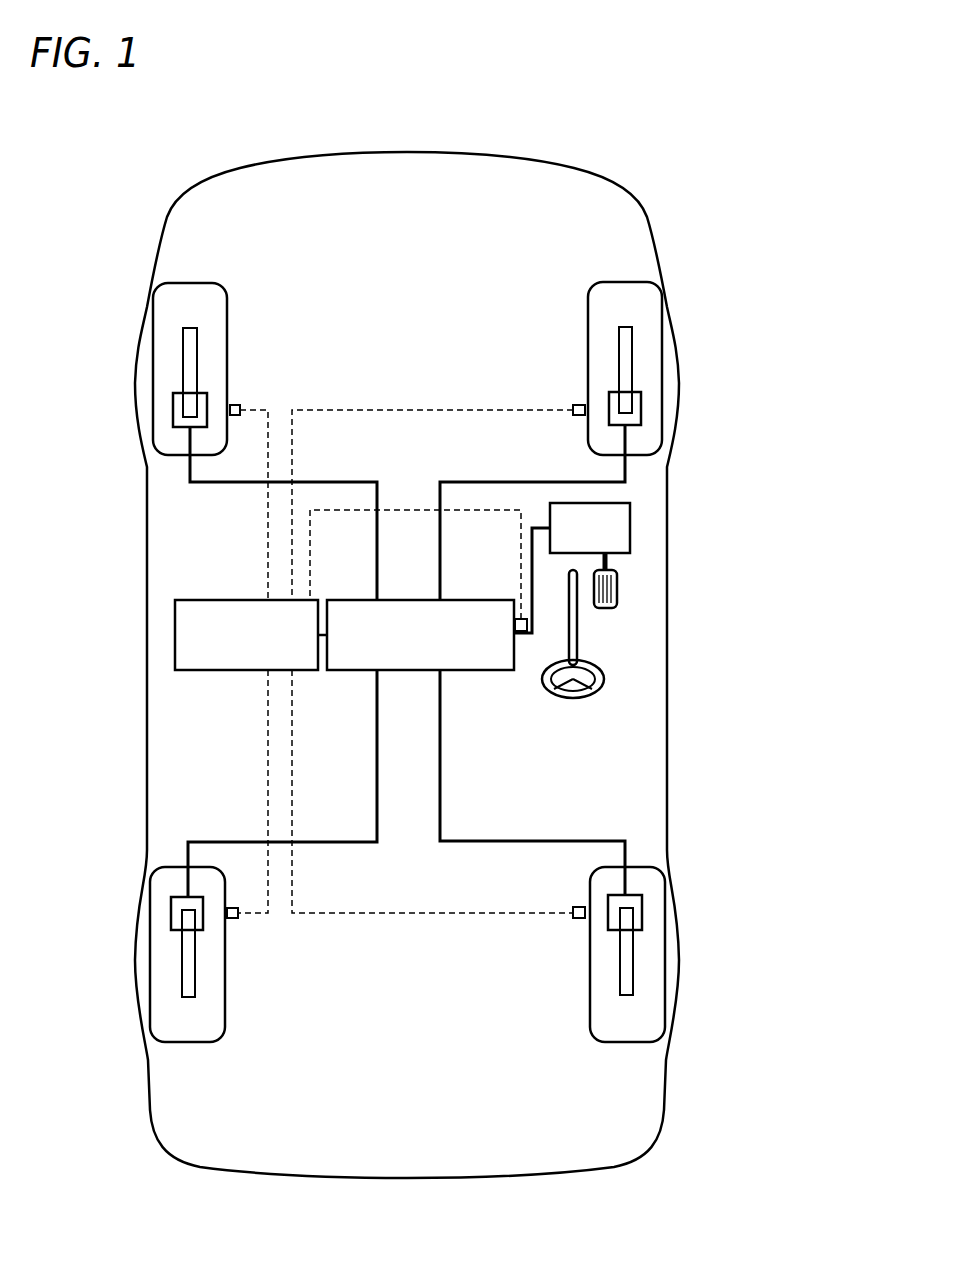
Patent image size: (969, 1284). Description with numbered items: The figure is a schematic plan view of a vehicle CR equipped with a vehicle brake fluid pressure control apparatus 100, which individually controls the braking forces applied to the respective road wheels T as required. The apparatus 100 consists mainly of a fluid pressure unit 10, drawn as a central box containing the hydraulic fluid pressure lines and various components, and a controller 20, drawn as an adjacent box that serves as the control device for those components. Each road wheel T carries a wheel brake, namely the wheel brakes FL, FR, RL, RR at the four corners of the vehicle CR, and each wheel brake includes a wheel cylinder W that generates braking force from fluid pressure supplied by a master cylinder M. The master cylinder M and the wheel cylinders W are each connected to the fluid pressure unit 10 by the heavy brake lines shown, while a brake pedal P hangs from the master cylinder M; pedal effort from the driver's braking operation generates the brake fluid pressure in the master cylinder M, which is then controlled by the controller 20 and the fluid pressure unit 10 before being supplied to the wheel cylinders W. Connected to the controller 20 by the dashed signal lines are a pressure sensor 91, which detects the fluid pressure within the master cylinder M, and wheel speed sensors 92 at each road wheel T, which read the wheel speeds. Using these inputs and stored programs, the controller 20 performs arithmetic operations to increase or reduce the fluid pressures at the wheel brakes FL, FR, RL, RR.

The vehicle brake fluid pressure control apparatus 100 is at (162, 603).
The fluid pressure unit 10 is at (462, 670).
The controller 20 is at (228, 670).
The pressure sensor 91 is at (527, 626).
The wheel speed sensor 92 is at (233, 403).
The vehicle CR is at (542, 157).
The road wheel T is at (153, 333).
The wheel cylinder W is at (173, 412).
The wheel brake FL is at (183, 365).
The wheel brake FR is at (632, 368).
The wheel brake RL is at (182, 955).
The wheel brake RR is at (633, 955).
The master cylinder M is at (630, 535).
The brake pedal P is at (617, 598).